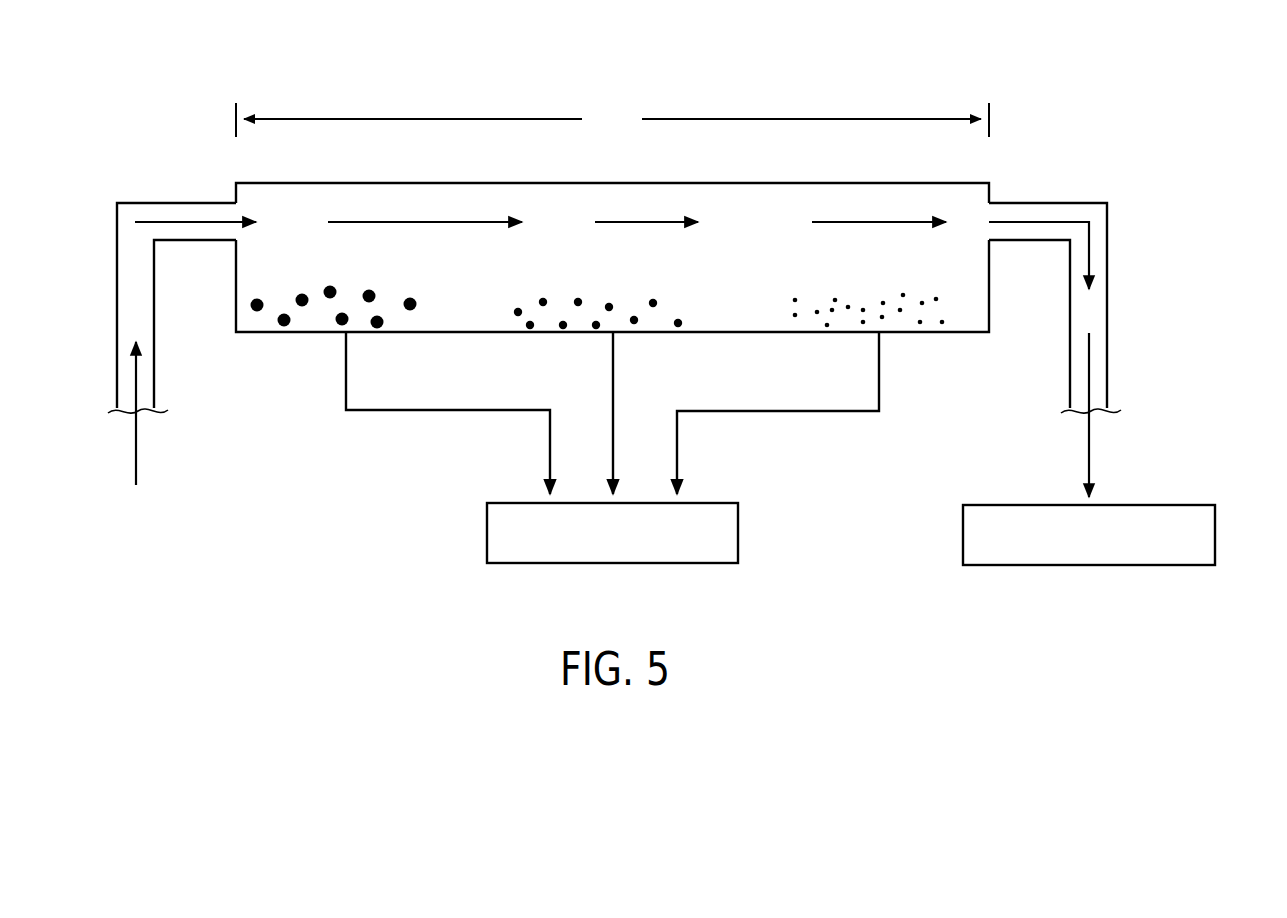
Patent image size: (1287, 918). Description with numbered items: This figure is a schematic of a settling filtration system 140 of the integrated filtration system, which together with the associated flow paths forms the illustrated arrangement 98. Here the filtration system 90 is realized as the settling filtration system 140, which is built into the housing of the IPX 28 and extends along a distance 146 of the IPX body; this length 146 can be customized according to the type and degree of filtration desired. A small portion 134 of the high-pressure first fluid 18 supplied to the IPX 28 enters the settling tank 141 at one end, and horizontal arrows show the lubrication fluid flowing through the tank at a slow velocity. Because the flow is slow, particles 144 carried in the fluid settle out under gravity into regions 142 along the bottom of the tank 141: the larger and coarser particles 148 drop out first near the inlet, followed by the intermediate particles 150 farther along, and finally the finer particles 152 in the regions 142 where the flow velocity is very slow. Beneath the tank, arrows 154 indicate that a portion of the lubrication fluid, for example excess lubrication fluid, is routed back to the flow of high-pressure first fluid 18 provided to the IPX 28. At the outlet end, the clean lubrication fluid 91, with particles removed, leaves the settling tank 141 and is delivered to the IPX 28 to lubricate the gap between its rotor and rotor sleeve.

The particle separation system 98 is at (936, 72).
The settling tank 141 is at (354, 183).
The filtration system 90 is at (540, 181).
The settling filtration system 140 is at (568, 202).
The distance 146 is at (612, 120).
The small portion 134 is at (136, 445).
The regions 142 is at (348, 268).
The particles 144 is at (641, 376).
The larger and coarser particles 148 is at (330, 298).
The intermediate particles 150 is at (578, 303).
The finer particles 152 is at (900, 312).
The arrows 154 is at (447, 412).
The first fluid 18 is at (738, 530).
The clean lubrication fluid 91 is at (1089, 450).
The IPX 28 is at (1166, 310).